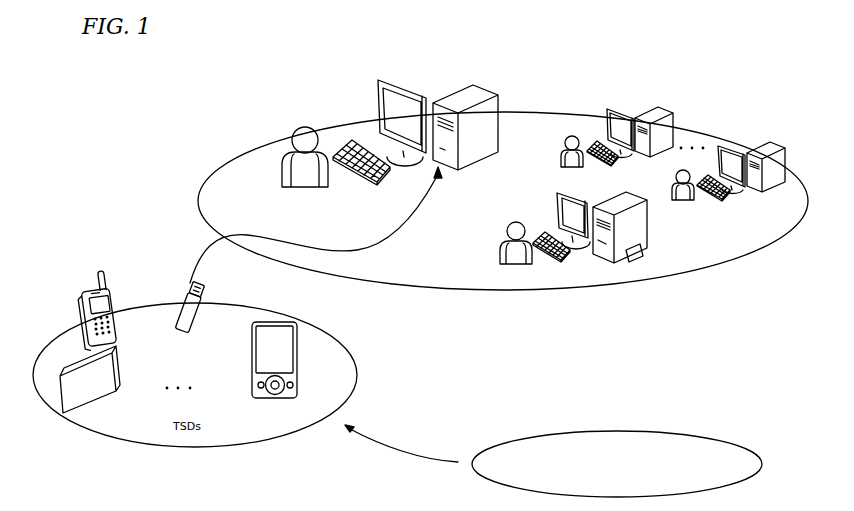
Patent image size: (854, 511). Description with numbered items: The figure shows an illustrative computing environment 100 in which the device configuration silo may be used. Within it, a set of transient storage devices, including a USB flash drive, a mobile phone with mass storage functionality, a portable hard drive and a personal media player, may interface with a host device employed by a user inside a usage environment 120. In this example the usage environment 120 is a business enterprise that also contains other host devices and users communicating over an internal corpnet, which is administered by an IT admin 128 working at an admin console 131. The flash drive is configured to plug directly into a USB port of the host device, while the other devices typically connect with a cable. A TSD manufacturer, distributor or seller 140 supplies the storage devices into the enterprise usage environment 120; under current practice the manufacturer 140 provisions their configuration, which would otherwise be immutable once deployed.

The computing environment 100 is at (269, 55).
The usage environment 120 is at (683, 273).
The IT admin 128 is at (499, 248).
The admin console 131 is at (648, 218).
The TSD manufacturer, distributor, or seller 140 is at (763, 465).